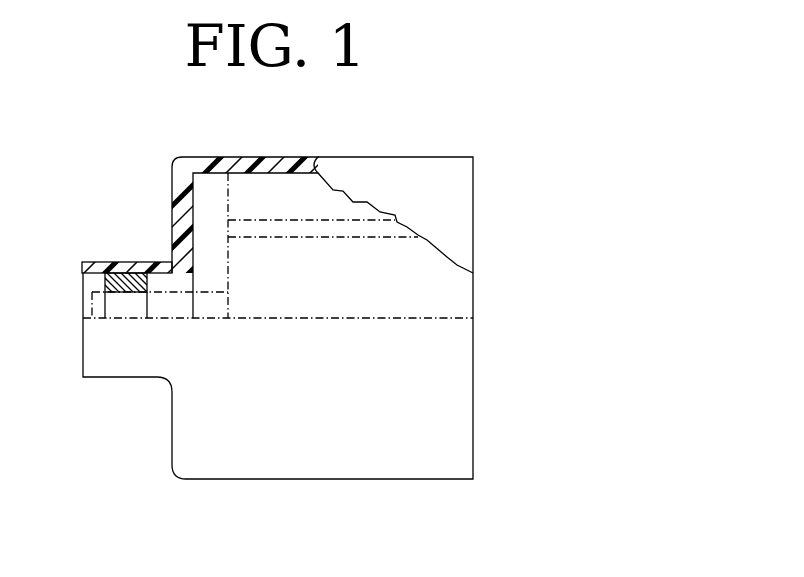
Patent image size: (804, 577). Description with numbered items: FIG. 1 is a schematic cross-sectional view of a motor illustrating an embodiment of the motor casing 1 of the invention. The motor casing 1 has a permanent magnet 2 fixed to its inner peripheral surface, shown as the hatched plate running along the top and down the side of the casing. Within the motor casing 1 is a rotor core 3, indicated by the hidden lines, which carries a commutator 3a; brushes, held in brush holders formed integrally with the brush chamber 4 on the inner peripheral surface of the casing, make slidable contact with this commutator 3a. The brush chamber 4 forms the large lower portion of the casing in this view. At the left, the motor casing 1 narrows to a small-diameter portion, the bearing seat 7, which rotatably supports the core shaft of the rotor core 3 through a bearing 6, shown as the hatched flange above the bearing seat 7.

The motor casing 1 is at (393, 184).
The permanent magnet 2 is at (255, 202).
The rotor core 3 is at (402, 278).
The commutator 3a is at (205, 300).
The brush chamber 4 is at (333, 435).
The bearing 6 is at (117, 262).
The bearing seat 7 is at (117, 363).